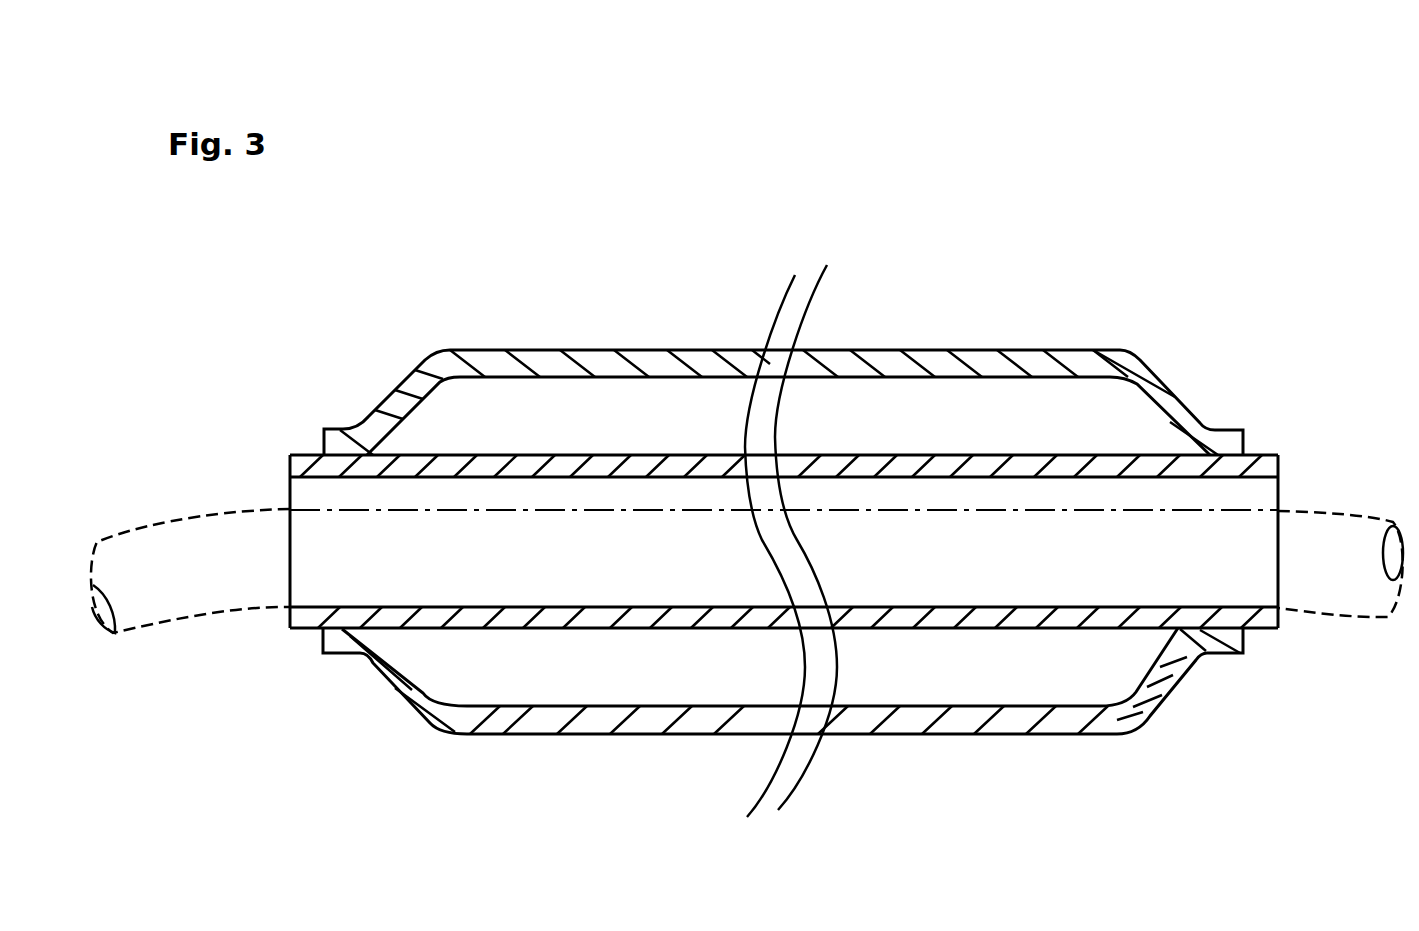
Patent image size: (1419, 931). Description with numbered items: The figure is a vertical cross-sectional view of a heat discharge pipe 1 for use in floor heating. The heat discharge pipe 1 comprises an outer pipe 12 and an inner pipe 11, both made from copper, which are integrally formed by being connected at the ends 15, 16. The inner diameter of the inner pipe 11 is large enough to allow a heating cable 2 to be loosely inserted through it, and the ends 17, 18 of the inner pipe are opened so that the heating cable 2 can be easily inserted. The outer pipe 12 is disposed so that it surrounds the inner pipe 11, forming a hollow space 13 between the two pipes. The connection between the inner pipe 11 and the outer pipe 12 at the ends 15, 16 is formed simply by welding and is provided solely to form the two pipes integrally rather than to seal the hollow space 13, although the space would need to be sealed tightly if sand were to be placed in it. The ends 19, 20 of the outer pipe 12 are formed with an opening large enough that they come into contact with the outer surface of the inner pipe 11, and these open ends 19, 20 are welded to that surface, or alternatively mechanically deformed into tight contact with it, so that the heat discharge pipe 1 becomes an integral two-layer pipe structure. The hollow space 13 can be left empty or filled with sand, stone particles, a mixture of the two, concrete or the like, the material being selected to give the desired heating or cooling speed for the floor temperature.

The heat discharge pipe 1 is at (803, 208).
The heating cable 2 is at (212, 615).
The inner pipe 11 is at (427, 453).
The outer pipe 12 is at (548, 350).
The hollow space 13 is at (672, 395).
The end 15 is at (322, 350).
The end 16 is at (1243, 347).
The end 17 is at (293, 630).
The end 18 is at (1268, 635).
The open end 19 is at (365, 422).
The open end 20 is at (1205, 425).